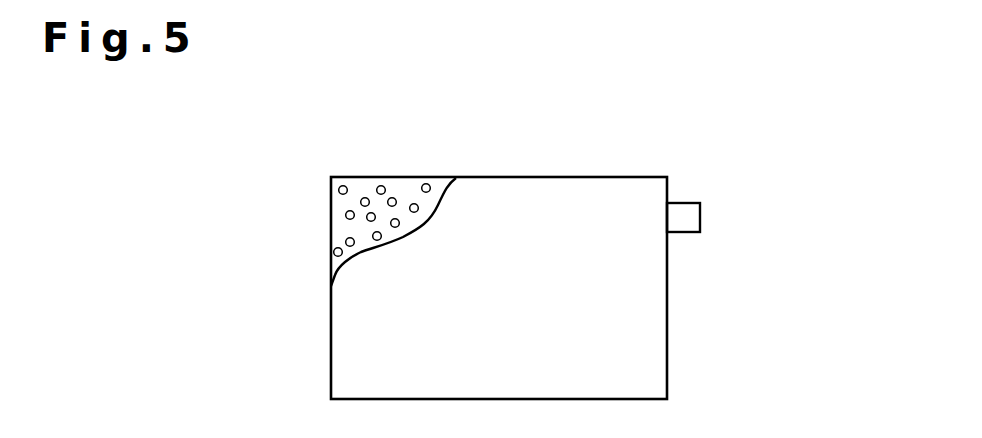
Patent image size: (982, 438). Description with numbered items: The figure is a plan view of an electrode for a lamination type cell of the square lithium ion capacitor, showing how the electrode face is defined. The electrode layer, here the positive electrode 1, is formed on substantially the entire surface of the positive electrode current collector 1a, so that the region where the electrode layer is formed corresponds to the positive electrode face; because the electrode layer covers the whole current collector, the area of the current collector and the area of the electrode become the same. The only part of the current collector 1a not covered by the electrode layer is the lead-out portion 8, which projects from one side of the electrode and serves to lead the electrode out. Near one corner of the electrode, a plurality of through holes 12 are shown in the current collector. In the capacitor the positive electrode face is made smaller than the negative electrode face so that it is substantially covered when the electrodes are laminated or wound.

The positive electrode 1 is at (643, 318).
The positive electrode current collector 1a is at (413, 185).
The lead-out portion 8 is at (687, 218).
The through hole 12 is at (378, 186).